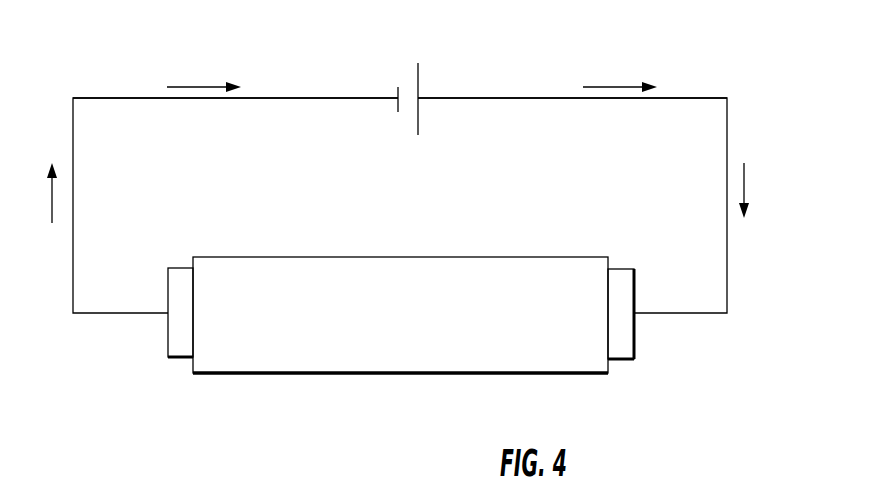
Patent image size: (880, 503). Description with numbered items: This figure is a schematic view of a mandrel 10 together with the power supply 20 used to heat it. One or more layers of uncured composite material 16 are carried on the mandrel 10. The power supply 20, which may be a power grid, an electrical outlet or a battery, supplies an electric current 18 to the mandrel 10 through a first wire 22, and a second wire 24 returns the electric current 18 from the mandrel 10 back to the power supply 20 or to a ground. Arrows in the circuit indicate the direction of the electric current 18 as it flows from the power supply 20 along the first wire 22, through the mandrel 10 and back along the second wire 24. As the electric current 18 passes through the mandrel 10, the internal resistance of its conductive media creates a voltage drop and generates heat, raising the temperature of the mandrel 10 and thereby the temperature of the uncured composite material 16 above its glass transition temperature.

The mandrel 10 is at (181, 360).
The one or more layers of uncured composite material 16 is at (455, 364).
The electric current 18 is at (184, 86).
The power supply 20 is at (448, 70).
The first wire 22 is at (585, 99).
The second wire 24 is at (163, 99).